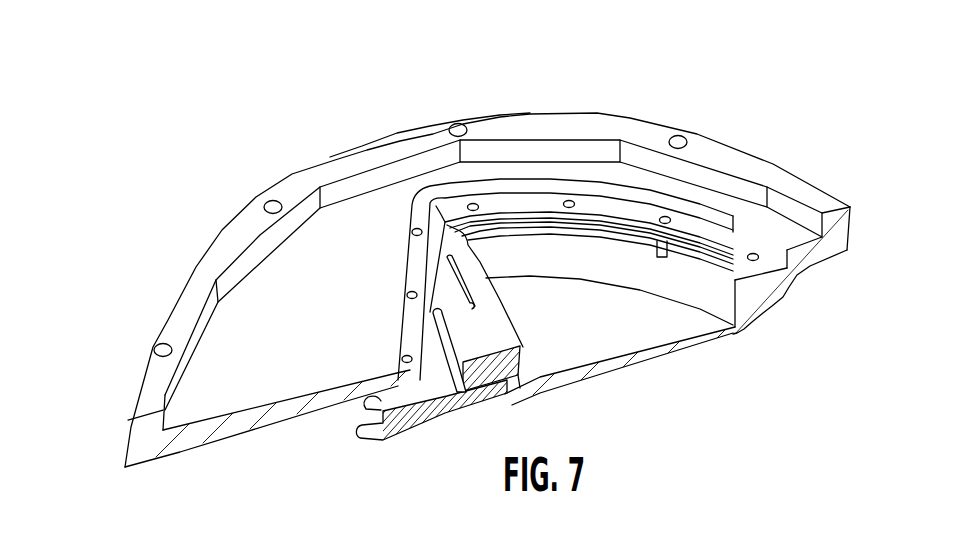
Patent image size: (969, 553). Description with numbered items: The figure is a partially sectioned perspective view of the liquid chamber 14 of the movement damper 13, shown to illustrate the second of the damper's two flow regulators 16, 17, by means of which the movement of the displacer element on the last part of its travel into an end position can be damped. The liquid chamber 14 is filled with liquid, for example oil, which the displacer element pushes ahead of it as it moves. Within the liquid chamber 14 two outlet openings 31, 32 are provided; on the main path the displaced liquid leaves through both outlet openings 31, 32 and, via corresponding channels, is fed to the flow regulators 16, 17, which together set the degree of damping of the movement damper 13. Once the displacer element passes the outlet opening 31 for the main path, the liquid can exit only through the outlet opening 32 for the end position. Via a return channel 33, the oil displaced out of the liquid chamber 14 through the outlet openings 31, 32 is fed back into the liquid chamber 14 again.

The movement damper 13 is at (150, 290).
The liquid chamber 14 is at (645, 332).
The flow regulator 16 is at (457, 305).
The flow regulator 17 is at (463, 405).
The outlet opening 31 is at (663, 247).
The outlet opening 32 is at (530, 378).
The return channel 33 is at (430, 280).